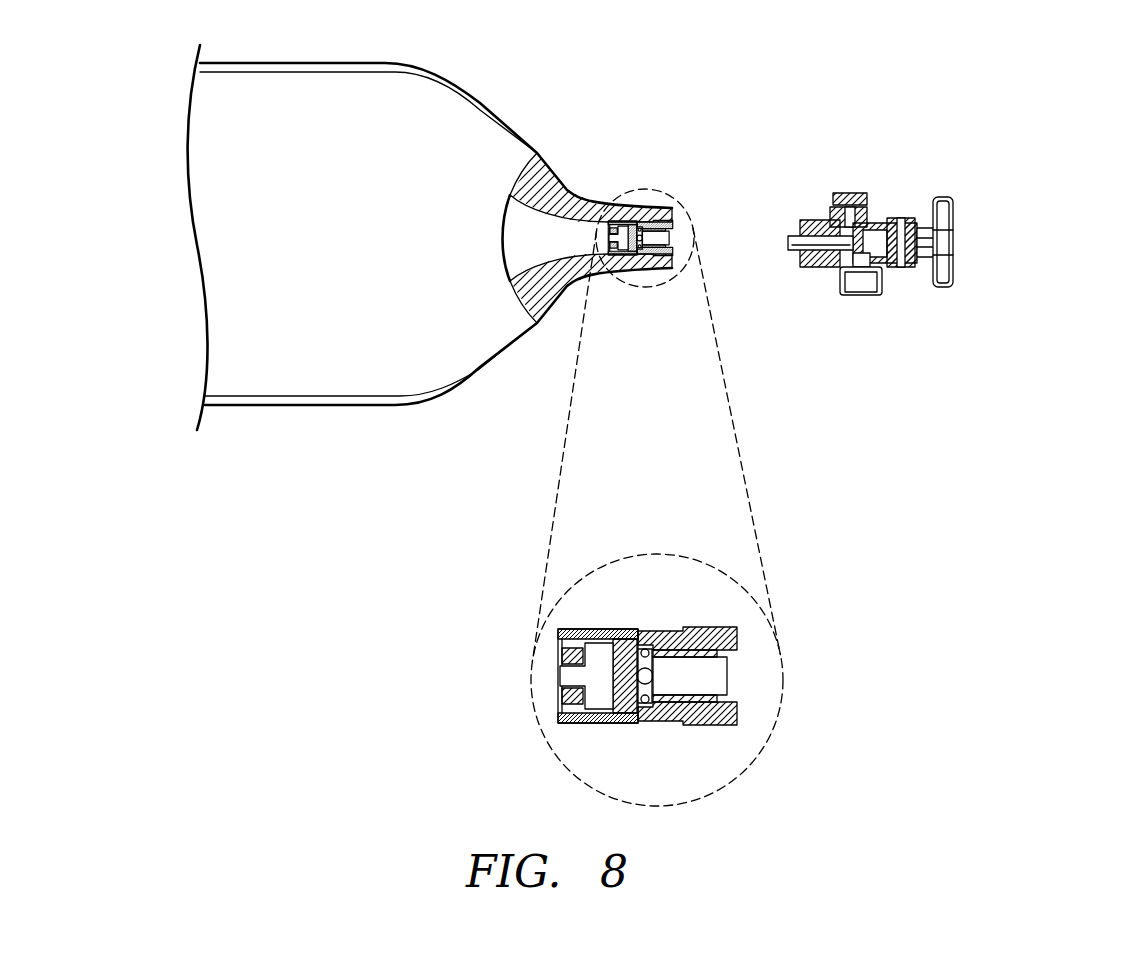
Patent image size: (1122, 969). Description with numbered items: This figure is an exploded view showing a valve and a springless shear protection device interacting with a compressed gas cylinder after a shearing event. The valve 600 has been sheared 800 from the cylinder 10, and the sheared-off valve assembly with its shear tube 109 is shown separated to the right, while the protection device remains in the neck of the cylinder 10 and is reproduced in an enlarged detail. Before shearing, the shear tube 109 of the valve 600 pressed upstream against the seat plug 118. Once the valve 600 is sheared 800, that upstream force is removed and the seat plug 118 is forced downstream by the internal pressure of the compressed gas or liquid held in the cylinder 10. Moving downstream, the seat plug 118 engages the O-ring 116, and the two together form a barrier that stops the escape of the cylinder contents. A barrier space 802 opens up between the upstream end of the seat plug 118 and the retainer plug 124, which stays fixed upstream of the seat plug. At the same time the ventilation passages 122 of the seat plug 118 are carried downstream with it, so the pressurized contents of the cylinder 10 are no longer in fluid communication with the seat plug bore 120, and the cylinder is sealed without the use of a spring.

The cylinder 10 is at (345, 406).
The shear 800 is at (775, 208).
The valve 600 is at (946, 185).
The shear tube 109 is at (788, 240).
The barrier space 802 is at (597, 651).
The O-ring 116 is at (672, 636).
The retainer plug 124 is at (547, 693).
The seat plug bore 120 is at (708, 676).
The ventilation passages 122 is at (638, 716).
The seat plug 118 is at (672, 721).